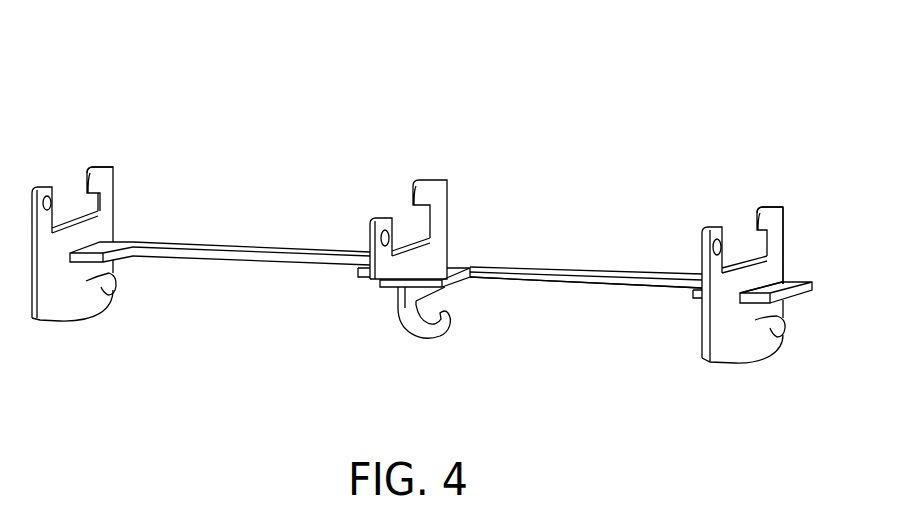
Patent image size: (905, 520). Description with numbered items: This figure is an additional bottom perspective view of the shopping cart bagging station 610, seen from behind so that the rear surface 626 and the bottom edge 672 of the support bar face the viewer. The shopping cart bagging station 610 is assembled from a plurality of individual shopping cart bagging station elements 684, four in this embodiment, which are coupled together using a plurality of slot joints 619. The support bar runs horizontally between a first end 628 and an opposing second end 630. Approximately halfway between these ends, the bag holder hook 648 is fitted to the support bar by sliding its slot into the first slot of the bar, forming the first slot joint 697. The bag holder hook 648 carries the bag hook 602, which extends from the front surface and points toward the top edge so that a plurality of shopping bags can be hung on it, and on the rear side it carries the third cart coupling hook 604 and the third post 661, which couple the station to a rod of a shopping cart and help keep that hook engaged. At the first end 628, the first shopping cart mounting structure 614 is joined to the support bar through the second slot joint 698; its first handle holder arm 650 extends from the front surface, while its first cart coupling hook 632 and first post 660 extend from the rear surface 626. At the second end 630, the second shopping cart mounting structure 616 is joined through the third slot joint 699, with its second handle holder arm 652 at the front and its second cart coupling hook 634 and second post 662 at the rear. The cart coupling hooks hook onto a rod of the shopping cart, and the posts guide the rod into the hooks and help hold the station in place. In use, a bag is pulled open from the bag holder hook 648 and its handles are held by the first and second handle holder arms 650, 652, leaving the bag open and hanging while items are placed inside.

The shopping cart bagging station 610 is at (410, 107).
The bag hook 602 is at (433, 330).
The third cart coupling hook 604 is at (432, 192).
The first shopping cart mounting structure 614 is at (748, 350).
The second shopping cart mounting structure 616 is at (88, 310).
The slot joints 619 is at (818, 294).
The rear surface 626 is at (588, 270).
The first end 628 is at (772, 388).
The second end 630 is at (32, 330).
The first cart coupling hook 632 is at (775, 205).
The second cart coupling hook 634 is at (99, 173).
The bag holder hook 648 is at (413, 290).
The first handle holder arm 650 is at (782, 334).
The second handle holder arm 652 is at (117, 292).
The first post 660 is at (710, 228).
The third post 661 is at (380, 218).
The second post 662 is at (50, 186).
The bottom edge 672 is at (613, 281).
The shopping cart bagging station elements 684 is at (798, 189).
The first slot joint 697 is at (455, 253).
The second slot joint 698 is at (789, 274).
The third slot joint 699 is at (125, 237).